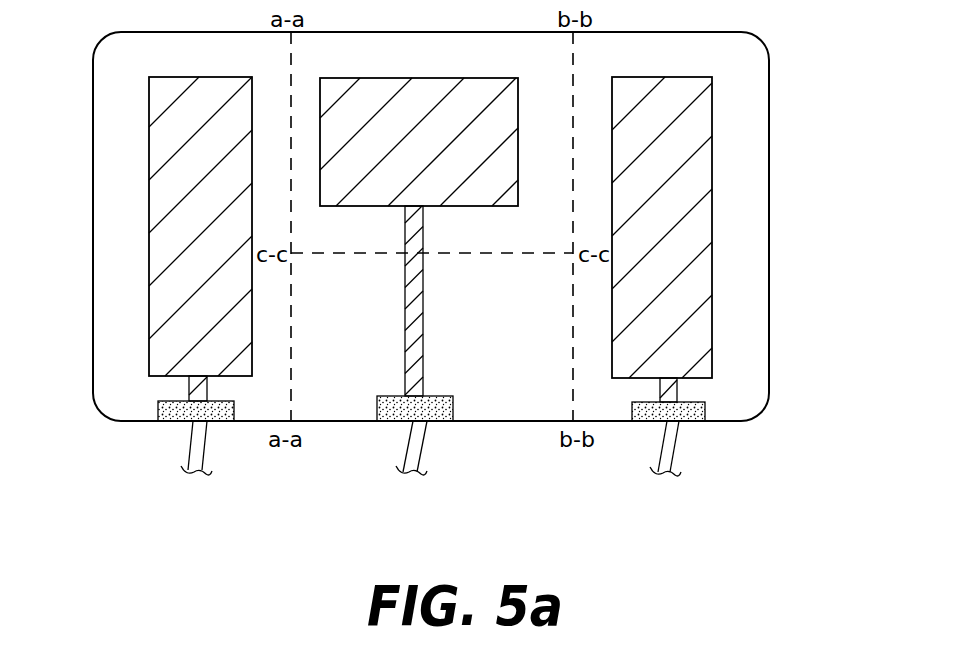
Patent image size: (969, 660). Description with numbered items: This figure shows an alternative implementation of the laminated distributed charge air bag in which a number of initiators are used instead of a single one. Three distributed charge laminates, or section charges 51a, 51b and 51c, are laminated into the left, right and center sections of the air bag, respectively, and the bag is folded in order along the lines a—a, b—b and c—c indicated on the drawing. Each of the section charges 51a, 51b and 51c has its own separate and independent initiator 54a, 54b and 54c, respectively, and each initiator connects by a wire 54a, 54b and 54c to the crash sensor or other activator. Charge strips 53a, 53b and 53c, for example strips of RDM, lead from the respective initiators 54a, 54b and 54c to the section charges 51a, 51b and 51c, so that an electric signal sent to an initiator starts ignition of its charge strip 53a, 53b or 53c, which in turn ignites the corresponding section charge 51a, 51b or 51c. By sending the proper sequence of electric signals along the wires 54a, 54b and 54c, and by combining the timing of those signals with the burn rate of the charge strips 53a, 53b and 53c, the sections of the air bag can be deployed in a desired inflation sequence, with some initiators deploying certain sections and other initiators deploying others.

The distributed charge laminate 51a is at (148, 264).
The distributed charge laminate 51b is at (712, 327).
The distributed charge laminate 51c is at (430, 78).
The charge strip 53a is at (183, 384).
The charge strip 53b is at (672, 388).
The charge strip 53c is at (423, 297).
The initiator with wire 54a is at (192, 465).
The initiator with wire 54b is at (663, 466).
The initiator with wire 54c is at (410, 464).